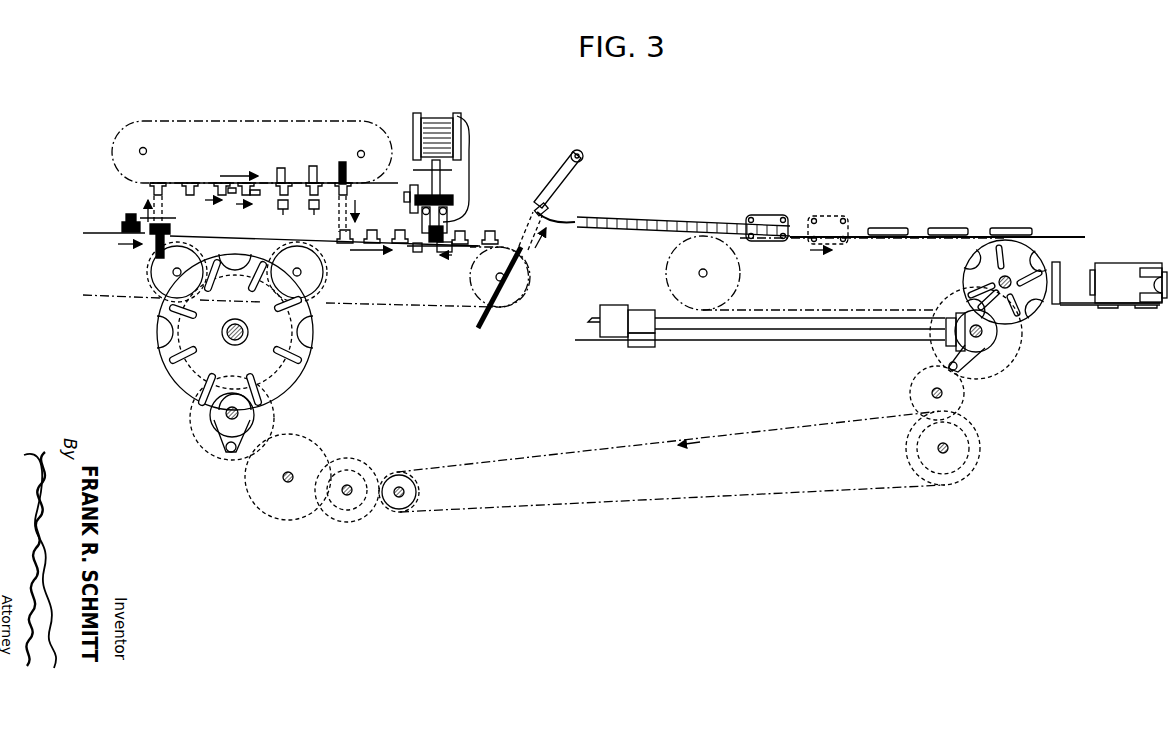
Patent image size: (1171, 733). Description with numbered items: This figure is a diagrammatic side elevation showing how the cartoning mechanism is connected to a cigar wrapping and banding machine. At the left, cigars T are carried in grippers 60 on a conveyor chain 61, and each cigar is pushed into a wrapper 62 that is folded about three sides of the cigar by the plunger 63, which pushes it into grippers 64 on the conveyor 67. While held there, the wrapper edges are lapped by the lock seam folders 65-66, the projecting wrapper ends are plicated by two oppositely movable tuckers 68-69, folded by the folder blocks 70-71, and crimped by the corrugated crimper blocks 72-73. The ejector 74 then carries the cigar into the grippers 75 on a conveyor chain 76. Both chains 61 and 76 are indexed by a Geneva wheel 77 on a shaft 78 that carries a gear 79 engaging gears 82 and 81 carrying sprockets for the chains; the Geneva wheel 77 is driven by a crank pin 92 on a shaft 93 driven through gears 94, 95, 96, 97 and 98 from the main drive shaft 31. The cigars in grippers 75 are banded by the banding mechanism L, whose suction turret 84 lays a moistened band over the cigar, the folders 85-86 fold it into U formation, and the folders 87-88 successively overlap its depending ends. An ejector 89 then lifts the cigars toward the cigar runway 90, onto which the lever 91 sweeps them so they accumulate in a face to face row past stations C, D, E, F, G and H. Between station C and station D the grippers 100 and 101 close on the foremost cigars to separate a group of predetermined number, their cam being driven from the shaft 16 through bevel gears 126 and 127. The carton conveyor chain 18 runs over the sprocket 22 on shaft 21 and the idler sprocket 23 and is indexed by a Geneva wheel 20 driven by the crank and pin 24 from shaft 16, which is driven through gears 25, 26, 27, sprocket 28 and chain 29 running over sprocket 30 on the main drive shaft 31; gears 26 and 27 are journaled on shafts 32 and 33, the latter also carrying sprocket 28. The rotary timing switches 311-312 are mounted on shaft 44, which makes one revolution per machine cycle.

The shaft 16 is at (982, 332).
The carton conveyor chain 18 is at (868, 240).
The Geneva wheel 20 is at (1018, 306).
The shaft 21 is at (1010, 286).
The sprocket 22 is at (963, 262).
The idler sprocket 23 is at (742, 254).
The crank and pin 24 is at (960, 368).
The gear 25 is at (965, 378).
The gear 26 is at (1142, 308).
The gear 27 is at (970, 448).
The sprocket 28 is at (906, 440).
The chain 29 is at (785, 430).
The sprocket 30 is at (410, 472).
The main drive shaft 31 is at (404, 496).
The shaft 32 is at (934, 394).
The shaft 33 is at (948, 451).
The shaft 44 is at (800, 340).
The grippers 60 is at (152, 236).
The conveyor chain 61 is at (95, 233).
The wrapper 62 is at (130, 220).
The plunger 63 is at (158, 253).
The grippers 64 is at (151, 180).
The lock seam folders 65-66 is at (213, 182).
The conveyor 67 is at (157, 121).
The tuckers 68-69 is at (258, 196).
The folder blocks 70-71 is at (290, 206).
The corrugated crimper blocks 72-73 is at (320, 205).
The ejector 74 is at (350, 186).
The grippers 75 is at (368, 250).
The conveyor chain 76 is at (485, 250).
The Geneva wheel 77 is at (292, 310).
The shaft 78 is at (246, 338).
The gear 79 is at (272, 380).
The gear 81 is at (300, 294).
The gear 82 is at (162, 290).
The suction turret 84 is at (448, 195).
The folders 85-86 is at (432, 210).
The folders 87-88 is at (440, 253).
The ejector 89 is at (505, 283).
The cigar runway 90 is at (558, 228).
The lever 91 is at (550, 207).
The crank pin 92 is at (222, 452).
The shaft 93 is at (228, 414).
The gear 94 is at (236, 462).
The gear 95 is at (262, 513).
The gear 96 is at (333, 505).
The gear 97 is at (338, 522).
The gear 98 is at (388, 510).
The gripper 100 is at (760, 216).
The gripper 101 is at (792, 215).
The bevel gear 126 is at (960, 318).
The bevel gear 127 is at (946, 325).
The rotary timing switches 311-312 is at (640, 316).
The station C is at (437, 118).
The banding mechanism L is at (463, 125).
The cigar T is at (126, 224).
The station D is at (829, 215).
The station E is at (889, 228).
The station F is at (948, 228).
The station G is at (1011, 228).
The station H is at (1060, 284).